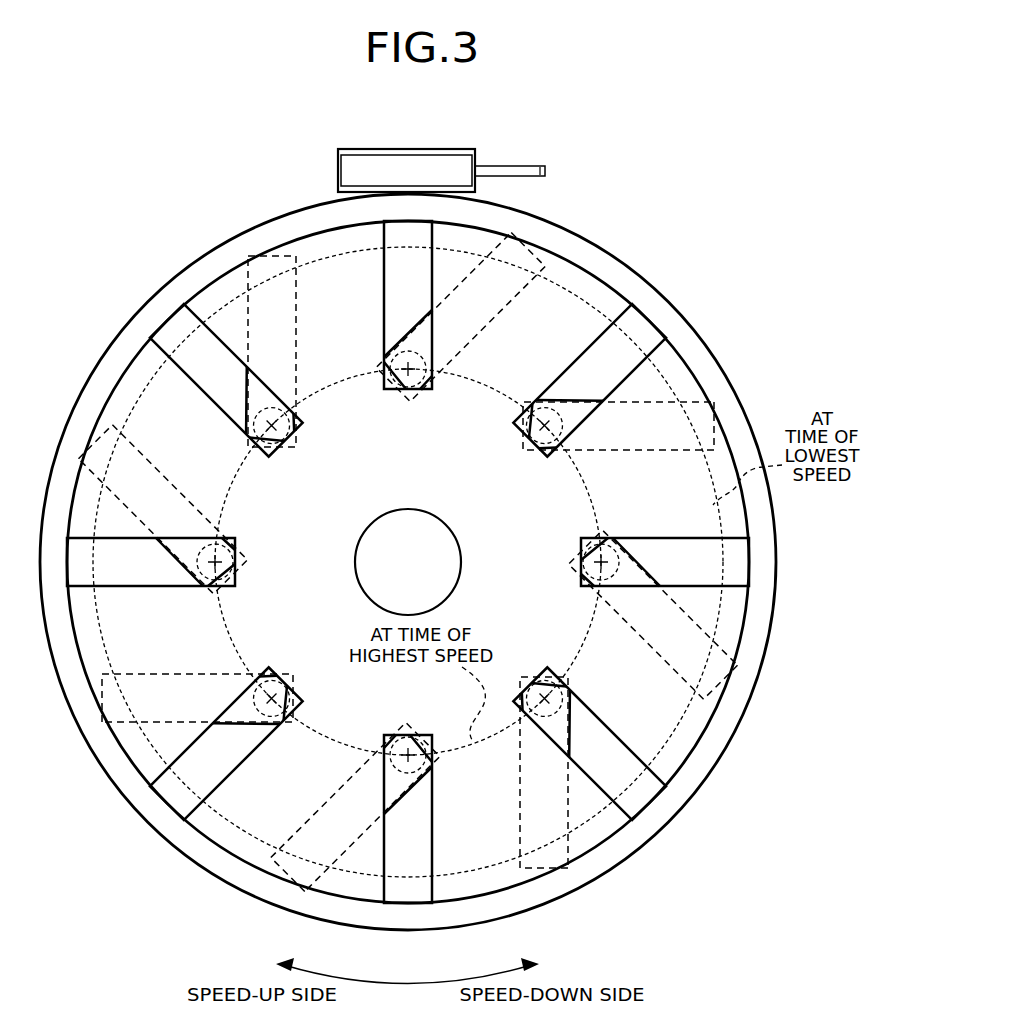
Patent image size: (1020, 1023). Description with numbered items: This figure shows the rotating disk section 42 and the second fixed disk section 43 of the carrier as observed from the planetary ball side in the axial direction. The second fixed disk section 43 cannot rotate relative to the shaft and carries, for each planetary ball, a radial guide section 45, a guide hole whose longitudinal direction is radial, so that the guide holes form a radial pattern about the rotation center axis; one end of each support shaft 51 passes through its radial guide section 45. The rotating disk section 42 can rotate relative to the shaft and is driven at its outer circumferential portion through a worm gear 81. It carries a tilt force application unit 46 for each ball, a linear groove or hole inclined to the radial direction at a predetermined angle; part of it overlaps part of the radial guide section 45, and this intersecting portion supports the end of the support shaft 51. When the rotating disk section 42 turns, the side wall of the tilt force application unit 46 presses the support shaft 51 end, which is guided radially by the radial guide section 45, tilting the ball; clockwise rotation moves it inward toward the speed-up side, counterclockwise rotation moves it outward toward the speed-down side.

The rotating disk section 42 is at (598, 247).
The second fixed disk section 43 is at (685, 353).
The radial guide section 45 is at (384, 281).
The tilt force application unit 46 is at (282, 360).
The support shaft 51 is at (400, 393).
The worm gear 81 is at (416, 149).